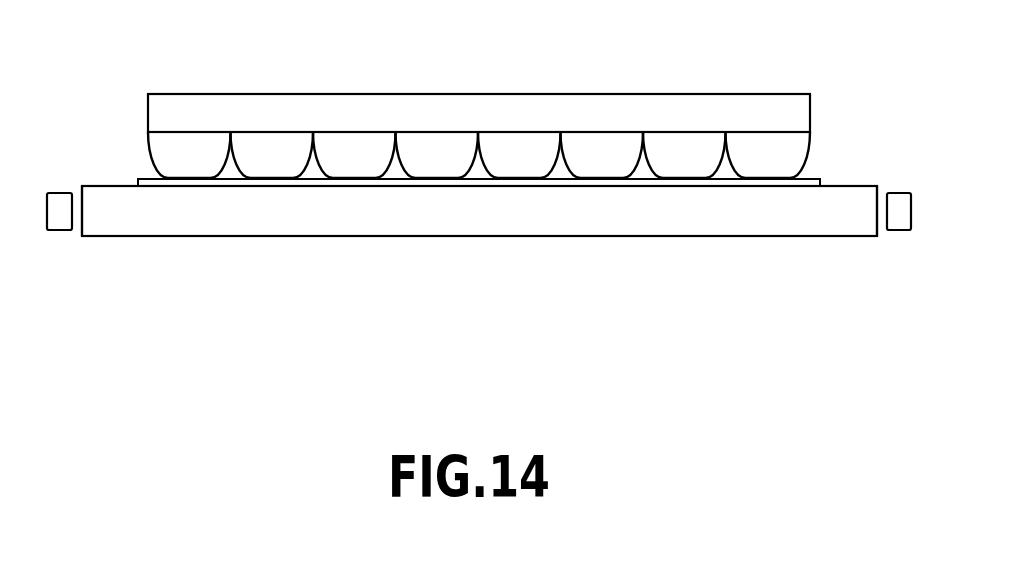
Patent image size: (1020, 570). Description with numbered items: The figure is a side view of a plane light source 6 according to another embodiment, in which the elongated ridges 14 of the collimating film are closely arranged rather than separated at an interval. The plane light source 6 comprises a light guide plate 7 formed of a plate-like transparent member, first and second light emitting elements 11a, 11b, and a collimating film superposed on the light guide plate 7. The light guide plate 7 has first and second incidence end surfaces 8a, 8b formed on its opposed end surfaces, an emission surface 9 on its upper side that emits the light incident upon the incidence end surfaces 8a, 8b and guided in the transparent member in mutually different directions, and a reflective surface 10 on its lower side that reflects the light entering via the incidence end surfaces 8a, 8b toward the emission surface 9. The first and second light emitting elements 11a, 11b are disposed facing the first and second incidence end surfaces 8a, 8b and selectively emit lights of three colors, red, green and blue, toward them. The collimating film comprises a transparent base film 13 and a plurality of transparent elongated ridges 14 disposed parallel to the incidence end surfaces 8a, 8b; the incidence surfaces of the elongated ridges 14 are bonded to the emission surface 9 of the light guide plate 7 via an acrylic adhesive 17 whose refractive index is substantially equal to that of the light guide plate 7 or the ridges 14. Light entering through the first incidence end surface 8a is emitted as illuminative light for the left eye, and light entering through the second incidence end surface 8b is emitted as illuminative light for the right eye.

The plane light source 6 is at (510, 96).
The transparent base film 13 is at (658, 118).
The elongated ridges 14 is at (441, 150).
The acrylic adhesive 17 is at (808, 177).
The emission surface 9 is at (473, 186).
The light guide plate 7 is at (235, 213).
The reflective surface 10 is at (560, 237).
The first incidence end surface 8a is at (80, 188).
The second incidence end surface 8b is at (878, 193).
The first light emitting element 11a is at (57, 212).
The second light emitting element 11b is at (898, 212).